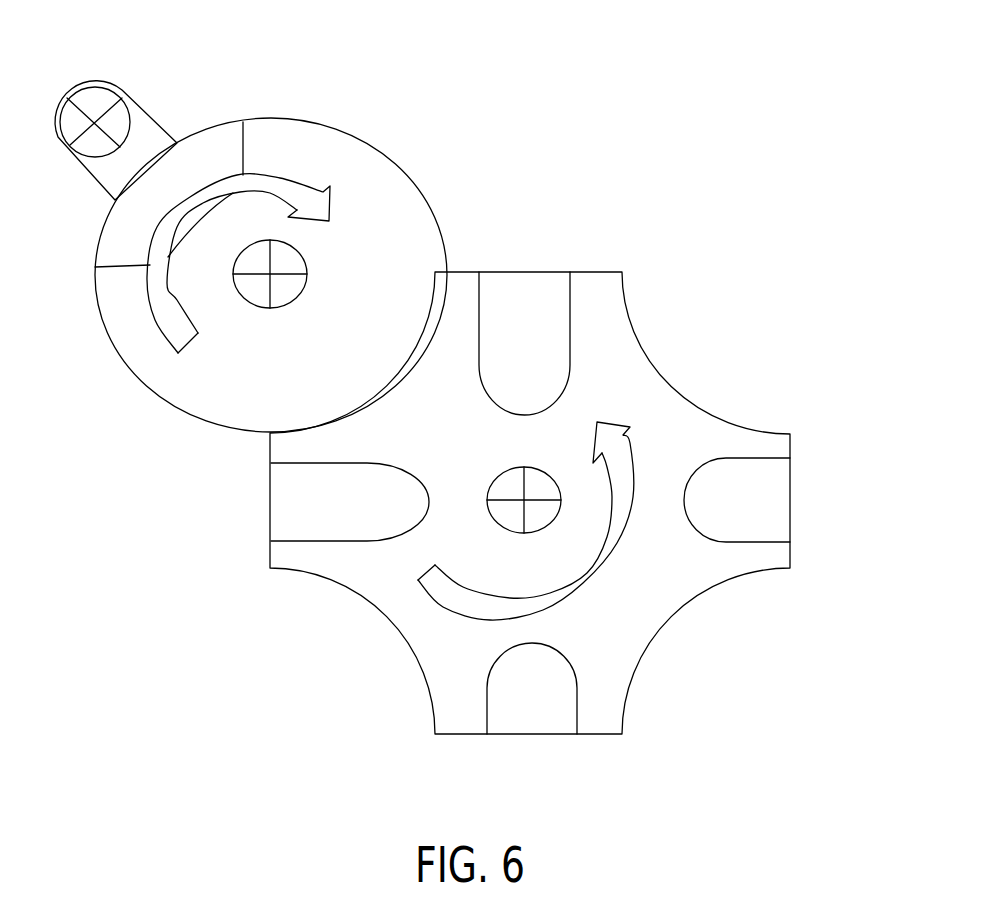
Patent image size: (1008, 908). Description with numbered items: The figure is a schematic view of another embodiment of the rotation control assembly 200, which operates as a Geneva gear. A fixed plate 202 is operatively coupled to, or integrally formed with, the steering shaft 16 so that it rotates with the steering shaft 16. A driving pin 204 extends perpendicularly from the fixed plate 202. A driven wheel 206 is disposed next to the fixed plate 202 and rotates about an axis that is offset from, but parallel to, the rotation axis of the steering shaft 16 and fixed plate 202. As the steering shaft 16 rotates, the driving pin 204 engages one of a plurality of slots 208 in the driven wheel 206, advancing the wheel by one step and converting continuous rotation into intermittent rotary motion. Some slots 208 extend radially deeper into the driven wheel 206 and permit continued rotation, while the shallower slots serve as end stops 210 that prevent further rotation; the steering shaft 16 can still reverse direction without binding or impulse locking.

The rotation control assembly 200 is at (588, 115).
The fixed plate 202 is at (222, 387).
The driving pin 204 is at (115, 130).
The driven wheel 206 is at (663, 398).
The slots 208 is at (543, 315).
The end stops 210 is at (760, 495).
The steering shaft 16 is at (287, 263).